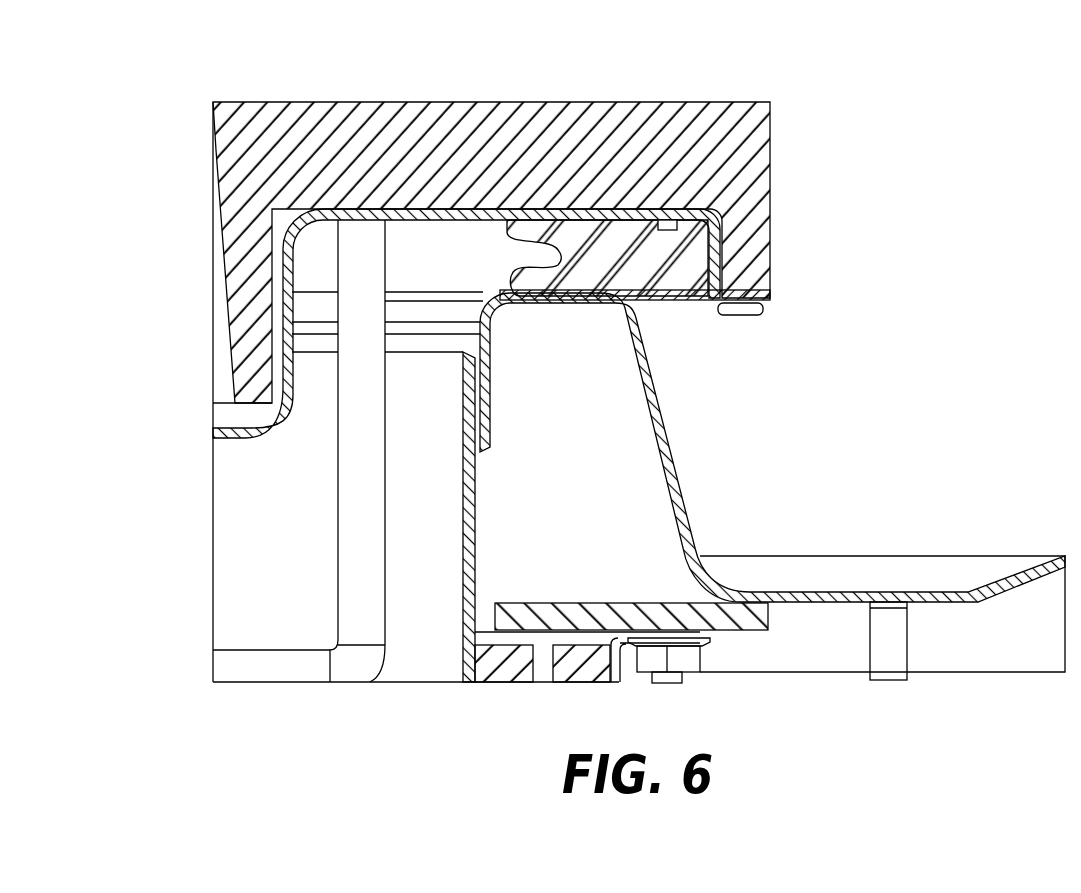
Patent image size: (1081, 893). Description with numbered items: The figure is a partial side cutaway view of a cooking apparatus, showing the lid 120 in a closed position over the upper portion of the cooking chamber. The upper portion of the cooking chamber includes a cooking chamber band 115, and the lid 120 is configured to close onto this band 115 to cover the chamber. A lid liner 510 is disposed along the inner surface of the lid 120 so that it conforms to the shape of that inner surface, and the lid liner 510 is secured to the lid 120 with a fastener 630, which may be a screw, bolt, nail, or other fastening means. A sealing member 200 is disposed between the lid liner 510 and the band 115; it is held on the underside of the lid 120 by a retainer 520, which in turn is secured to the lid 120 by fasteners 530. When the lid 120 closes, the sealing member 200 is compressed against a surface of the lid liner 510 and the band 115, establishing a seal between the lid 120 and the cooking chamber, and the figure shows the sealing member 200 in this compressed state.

The lid 120 is at (740, 183).
The lid liner 510 is at (287, 228).
The sealing member 200 is at (700, 252).
The fastener 630 is at (668, 218).
The retainer 520 is at (770, 300).
The fasteners 530 is at (733, 317).
The cooking chamber band 115 is at (672, 457).